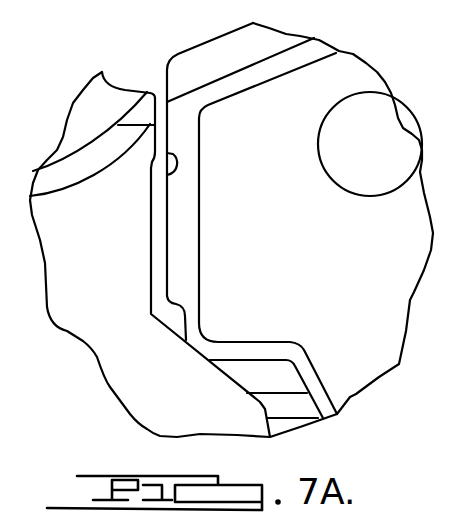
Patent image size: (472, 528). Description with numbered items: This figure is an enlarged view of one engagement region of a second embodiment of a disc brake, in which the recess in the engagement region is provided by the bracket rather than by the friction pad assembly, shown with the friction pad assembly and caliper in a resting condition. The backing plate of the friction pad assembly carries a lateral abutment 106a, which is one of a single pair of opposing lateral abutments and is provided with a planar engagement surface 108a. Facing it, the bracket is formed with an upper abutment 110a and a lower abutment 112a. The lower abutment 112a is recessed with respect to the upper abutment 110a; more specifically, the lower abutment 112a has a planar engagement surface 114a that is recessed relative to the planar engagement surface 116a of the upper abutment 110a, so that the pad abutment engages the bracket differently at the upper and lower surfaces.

The lateral abutment 106a is at (173, 217).
The engagement surface 108a is at (169, 231).
The upper abutment 110a is at (153, 147).
The lower abutment 112a is at (143, 243).
The planar engagement surface 114a is at (152, 277).
The planar engagement surface 116a is at (167, 166).